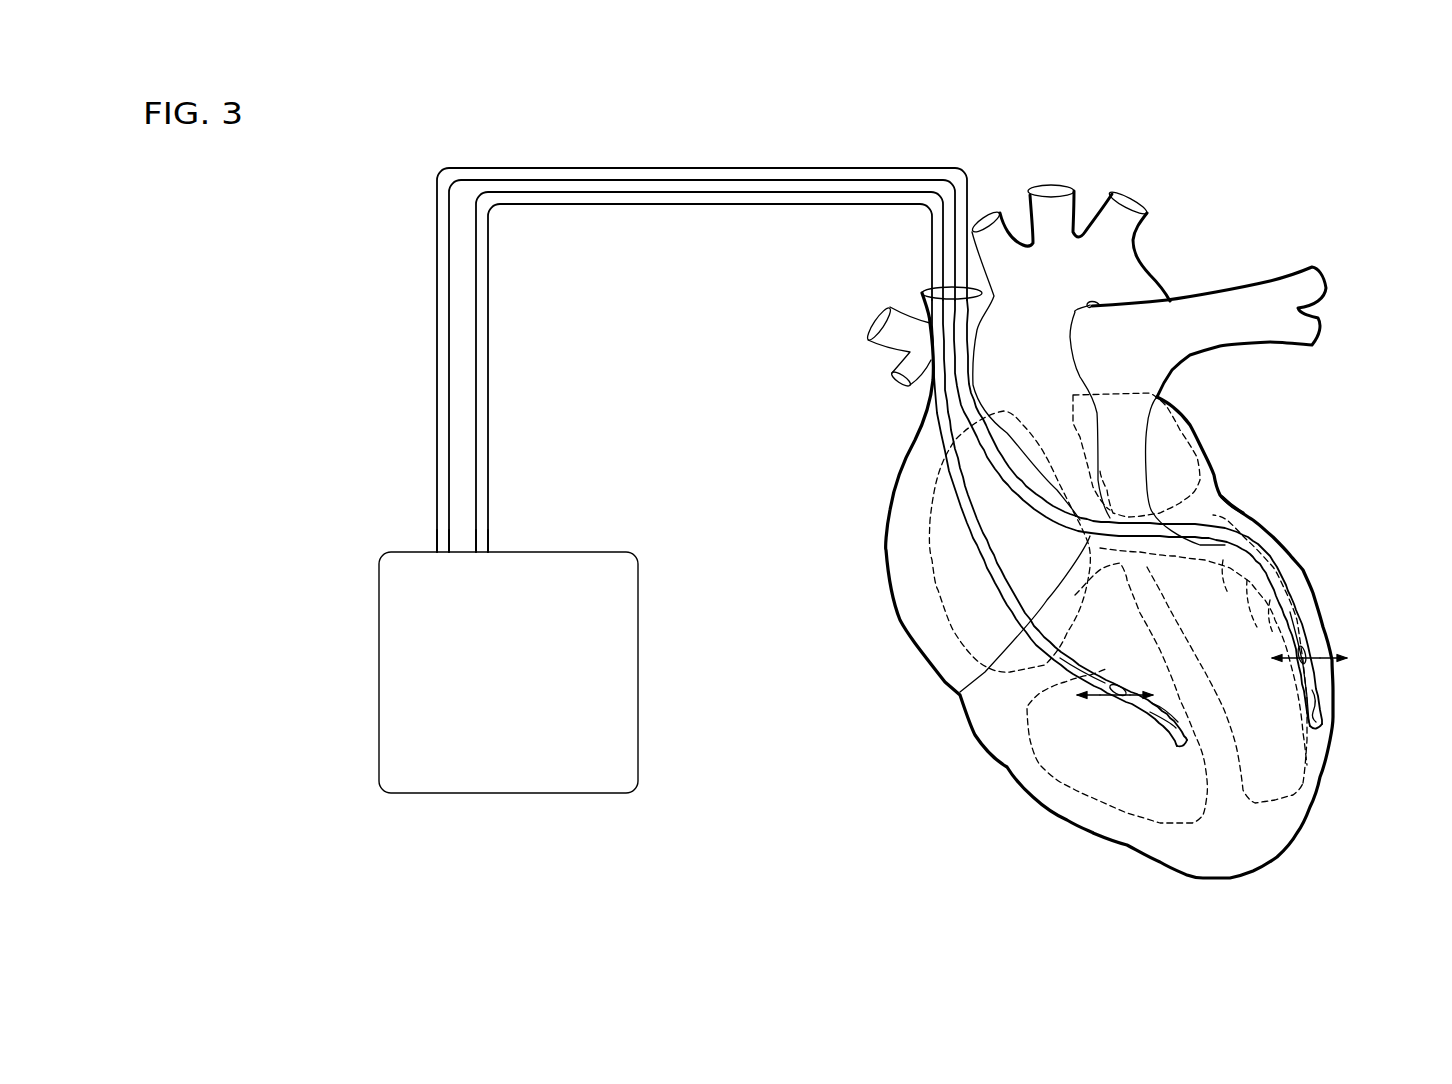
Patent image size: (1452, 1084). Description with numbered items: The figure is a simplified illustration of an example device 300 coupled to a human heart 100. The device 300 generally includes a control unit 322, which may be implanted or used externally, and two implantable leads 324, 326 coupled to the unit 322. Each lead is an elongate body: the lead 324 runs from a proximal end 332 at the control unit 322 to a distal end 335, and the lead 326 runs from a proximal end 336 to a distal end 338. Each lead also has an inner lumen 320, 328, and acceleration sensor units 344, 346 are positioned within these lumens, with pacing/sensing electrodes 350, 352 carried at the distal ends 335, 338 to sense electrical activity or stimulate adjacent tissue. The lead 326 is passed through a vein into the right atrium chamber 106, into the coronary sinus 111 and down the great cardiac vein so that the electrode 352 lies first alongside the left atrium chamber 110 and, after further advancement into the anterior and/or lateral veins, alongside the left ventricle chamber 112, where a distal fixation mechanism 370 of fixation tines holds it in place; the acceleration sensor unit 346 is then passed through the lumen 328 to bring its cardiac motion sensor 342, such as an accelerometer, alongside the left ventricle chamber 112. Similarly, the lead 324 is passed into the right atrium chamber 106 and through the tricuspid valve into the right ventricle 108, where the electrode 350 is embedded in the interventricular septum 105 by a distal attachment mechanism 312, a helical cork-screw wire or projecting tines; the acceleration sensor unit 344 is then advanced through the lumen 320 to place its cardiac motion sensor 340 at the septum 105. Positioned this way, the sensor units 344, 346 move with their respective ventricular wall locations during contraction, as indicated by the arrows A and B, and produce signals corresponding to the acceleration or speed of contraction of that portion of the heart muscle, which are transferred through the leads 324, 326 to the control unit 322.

The device 300 is at (362, 218).
The control unit 322 is at (570, 553).
The inner lumen 320 is at (480, 360).
The implantable lead 324 is at (487, 450).
The inner lumen 328 is at (443, 360).
The implantable lead 326 is at (437, 443).
The proximal end 332 is at (480, 540).
The proximal end 336 is at (440, 540).
The heart 100 is at (937, 742).
The interventricular septum 105 is at (1211, 767).
The right atrium chamber 106 is at (950, 617).
The right ventricle 108 is at (1085, 790).
The left atrium chamber 110 is at (1173, 417).
The coronary sinus 111 is at (1228, 518).
The left ventricle chamber 112 is at (1295, 797).
The distal attachment mechanism 312 is at (1185, 743).
The distal end 335 is at (1165, 728).
The cardiac motion sensor 340 is at (1117, 690).
The acceleration sensor unit 344 is at (1067, 660).
The pacing/sensing electrode 350 is at (1157, 707).
The arrow B is at (1080, 677).
The distal end 338 is at (1320, 723).
The cardiac motion sensor 342 is at (1300, 672).
The acceleration sensor unit 346 is at (1293, 618).
The pacing/sensing electrode 352 is at (1313, 700).
The distal fixation mechanism 370 is at (1285, 635).
The arrow A is at (1325, 643).